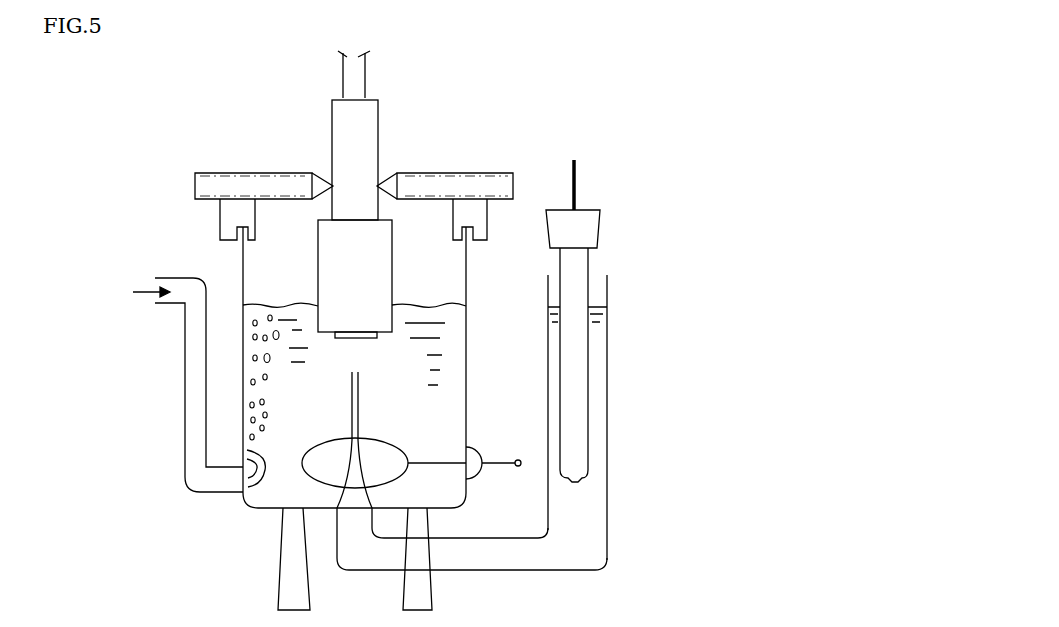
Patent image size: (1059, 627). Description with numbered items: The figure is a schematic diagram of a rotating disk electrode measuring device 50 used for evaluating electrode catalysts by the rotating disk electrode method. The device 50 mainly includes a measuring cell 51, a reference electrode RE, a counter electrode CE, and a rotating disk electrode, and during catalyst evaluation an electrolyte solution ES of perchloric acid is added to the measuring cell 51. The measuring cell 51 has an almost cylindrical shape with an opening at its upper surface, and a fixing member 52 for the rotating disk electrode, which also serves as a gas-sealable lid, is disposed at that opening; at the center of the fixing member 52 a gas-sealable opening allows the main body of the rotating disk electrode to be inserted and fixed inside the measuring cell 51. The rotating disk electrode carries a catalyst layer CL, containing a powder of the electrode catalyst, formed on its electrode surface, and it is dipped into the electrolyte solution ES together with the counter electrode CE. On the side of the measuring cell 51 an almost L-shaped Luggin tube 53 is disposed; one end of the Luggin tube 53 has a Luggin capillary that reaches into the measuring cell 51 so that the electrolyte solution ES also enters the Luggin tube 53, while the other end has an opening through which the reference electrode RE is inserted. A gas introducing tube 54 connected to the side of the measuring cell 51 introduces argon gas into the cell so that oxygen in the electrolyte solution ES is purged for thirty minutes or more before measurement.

The rotating disk electrode measuring device 50 is at (640, 137).
The measuring cell 51 is at (467, 322).
The fixing member 52 is at (500, 182).
The Luggin tube 53 is at (607, 395).
The gas introducing tube 54 is at (187, 415).
The catalyst layer CL is at (337, 337).
The electrolyte solution ES is at (693, 468).
The counter electrode CE is at (393, 443).
The reference electrode RE is at (580, 344).